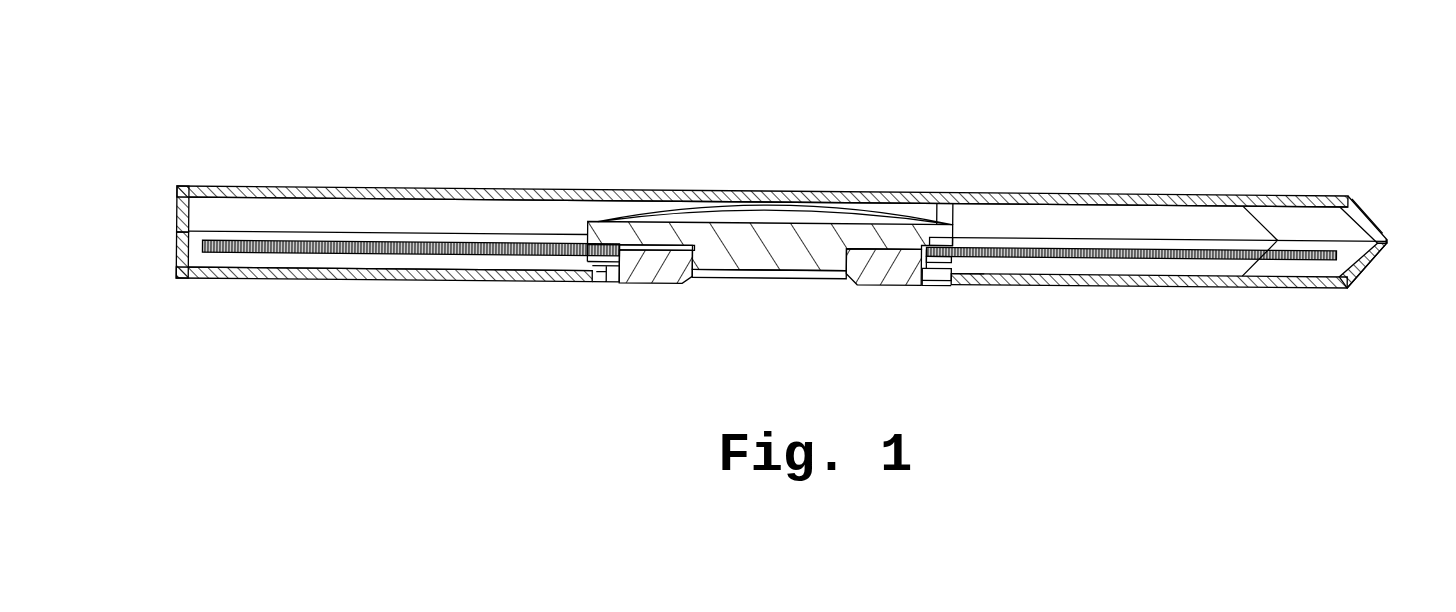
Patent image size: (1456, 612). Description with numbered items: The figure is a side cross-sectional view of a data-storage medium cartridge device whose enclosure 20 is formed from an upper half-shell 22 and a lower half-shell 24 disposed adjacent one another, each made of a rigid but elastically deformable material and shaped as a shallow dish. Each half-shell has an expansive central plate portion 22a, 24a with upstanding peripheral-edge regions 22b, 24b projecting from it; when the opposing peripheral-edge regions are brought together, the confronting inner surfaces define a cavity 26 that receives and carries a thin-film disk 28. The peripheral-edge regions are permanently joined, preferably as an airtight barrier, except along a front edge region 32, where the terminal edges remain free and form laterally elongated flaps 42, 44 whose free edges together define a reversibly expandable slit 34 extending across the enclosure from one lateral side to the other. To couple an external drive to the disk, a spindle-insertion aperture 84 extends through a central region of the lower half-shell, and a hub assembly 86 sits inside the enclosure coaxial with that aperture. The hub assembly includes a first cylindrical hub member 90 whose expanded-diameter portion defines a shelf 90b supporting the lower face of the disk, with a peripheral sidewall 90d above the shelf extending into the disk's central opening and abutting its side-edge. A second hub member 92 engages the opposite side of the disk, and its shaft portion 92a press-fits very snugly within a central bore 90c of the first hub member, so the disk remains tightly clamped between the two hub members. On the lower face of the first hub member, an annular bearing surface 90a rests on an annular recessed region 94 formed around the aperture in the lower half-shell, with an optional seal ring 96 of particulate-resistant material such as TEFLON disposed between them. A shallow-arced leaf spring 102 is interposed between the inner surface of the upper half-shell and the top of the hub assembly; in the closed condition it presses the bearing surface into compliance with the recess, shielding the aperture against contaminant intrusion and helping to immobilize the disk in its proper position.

The enclosure 20 is at (258, 92).
The upper half-shell 22 is at (305, 178).
The central plate portion of upper half-shell 22a is at (457, 190).
The peripheral-edge region of upper half-shell 22b is at (178, 210).
The lower half-shell 24 is at (302, 288).
The central plate portion of lower half-shell 24a is at (462, 282).
The peripheral-edge region of lower half-shell 24b is at (178, 248).
The cavity 26 is at (379, 229).
The thin-film disk 28 is at (1052, 264).
The front edge region 32 is at (1397, 210).
The slit 34 is at (1382, 245).
The upper flap 42 is at (1368, 212).
The lower flap 44 is at (1372, 265).
The spindle-insertion aperture 84 is at (928, 286).
The hub assembly 86 is at (958, 217).
The first hub member 90 is at (672, 281).
The bearing surface 90a is at (602, 283).
The shelf 90b is at (588, 242).
The central bore 90c is at (834, 286).
The peripheral sidewall 90d is at (937, 247).
The second hub member 92 is at (613, 228).
The shaft portion 92a is at (770, 264).
The annular recessed region 94 is at (937, 282).
The seal ring 96 is at (973, 287).
The leaf spring 102 is at (667, 215).